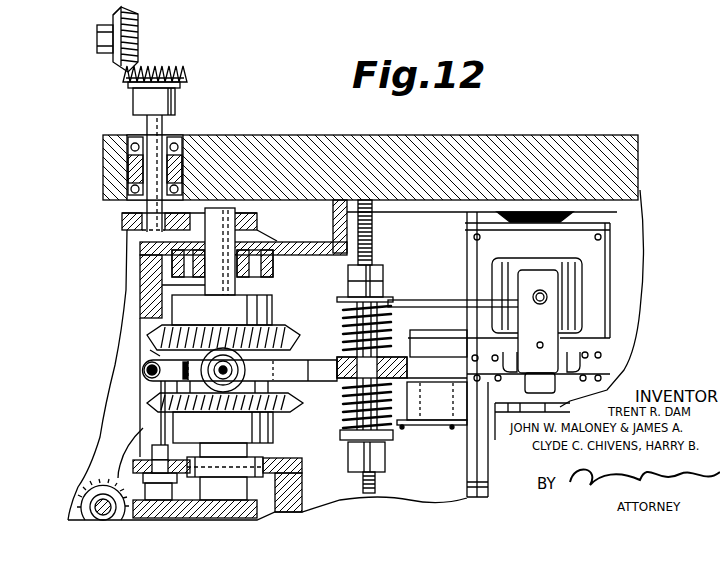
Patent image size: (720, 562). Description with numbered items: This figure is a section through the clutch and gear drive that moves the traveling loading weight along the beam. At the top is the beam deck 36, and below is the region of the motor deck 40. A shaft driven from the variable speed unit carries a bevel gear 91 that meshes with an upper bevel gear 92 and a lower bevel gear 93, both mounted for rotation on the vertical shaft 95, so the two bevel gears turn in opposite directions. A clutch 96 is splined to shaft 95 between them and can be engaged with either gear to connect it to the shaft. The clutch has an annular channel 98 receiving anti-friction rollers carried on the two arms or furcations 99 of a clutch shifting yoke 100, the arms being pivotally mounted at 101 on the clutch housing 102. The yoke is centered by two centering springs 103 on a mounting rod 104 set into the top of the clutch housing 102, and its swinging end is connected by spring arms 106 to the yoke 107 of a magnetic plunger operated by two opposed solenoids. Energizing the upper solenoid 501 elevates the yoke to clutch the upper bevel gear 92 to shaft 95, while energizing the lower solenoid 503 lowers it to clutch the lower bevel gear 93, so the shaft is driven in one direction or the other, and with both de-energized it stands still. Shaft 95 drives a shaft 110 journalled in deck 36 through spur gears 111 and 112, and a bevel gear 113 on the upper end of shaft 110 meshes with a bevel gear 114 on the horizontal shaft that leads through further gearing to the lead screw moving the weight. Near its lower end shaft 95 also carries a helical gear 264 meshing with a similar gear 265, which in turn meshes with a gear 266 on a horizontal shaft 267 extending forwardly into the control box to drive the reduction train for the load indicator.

The beam deck 36 is at (498, 143).
The motor deck 40 is at (590, 3).
The shaft 110 is at (150, 166).
The spur gear 111 is at (277, 251).
The spur gear 112 is at (122, 231).
The bevel gear 113 is at (162, 64).
The bevel gear 114 is at (138, 34).
The vertical shaft 95 is at (140, 285).
The clutch housing 102 is at (140, 313).
The annular channel 98 is at (190, 337).
The upper bevel gear 92 is at (278, 328).
The clutch 96 is at (160, 353).
The pivot 101 is at (147, 371).
The bevel gear 91 is at (255, 359).
The clutch shifting yoke 100 is at (305, 382).
The arms or furcations 99 is at (160, 384).
The lower bevel gear 93 is at (283, 412).
The centering springs 103 is at (347, 314).
The mounting rod 104 is at (372, 232).
The spring arms 106 is at (427, 300).
The yoke of magnetic plunger 107 is at (527, 343).
The upper solenoid 501 is at (582, 287).
The lower solenoid 503 is at (607, 388).
The helical gear 264 is at (302, 485).
The helical gear 265 is at (150, 447).
The gear 266 is at (83, 492).
The horizontal shaft 267 is at (93, 510).